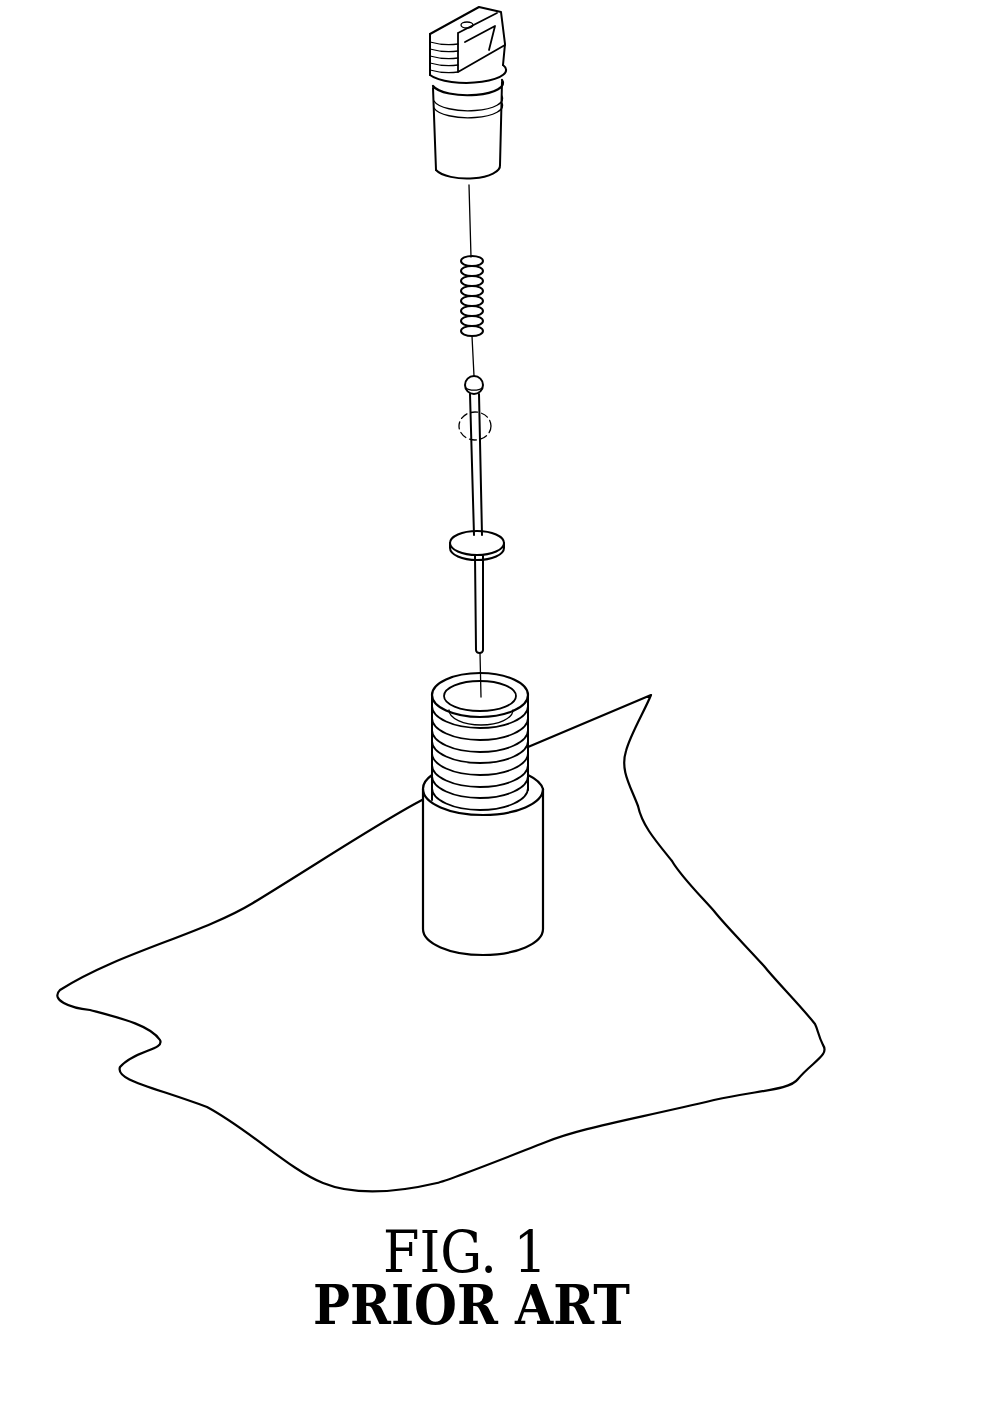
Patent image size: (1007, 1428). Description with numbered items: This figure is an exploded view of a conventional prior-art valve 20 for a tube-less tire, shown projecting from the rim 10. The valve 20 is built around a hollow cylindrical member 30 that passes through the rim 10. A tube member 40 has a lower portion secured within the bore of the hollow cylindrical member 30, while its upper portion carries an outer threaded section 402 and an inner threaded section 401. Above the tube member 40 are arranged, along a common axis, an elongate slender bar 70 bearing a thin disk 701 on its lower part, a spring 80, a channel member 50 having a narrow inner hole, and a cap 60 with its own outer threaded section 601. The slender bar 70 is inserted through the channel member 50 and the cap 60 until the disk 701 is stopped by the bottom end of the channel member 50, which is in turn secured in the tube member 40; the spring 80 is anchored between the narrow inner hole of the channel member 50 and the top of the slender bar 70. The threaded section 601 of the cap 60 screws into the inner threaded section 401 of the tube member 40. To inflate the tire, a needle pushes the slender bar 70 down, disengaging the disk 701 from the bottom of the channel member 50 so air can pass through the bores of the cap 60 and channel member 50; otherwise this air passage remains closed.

The rim 10 is at (257, 927).
The valve 20 is at (545, 477).
The hollow cylindrical member 30 is at (527, 870).
The tube member 40 is at (548, 697).
The inner threaded section 401 is at (497, 707).
The outer threaded section 402 is at (530, 728).
The channel member 50 is at (496, 148).
The cap 60 is at (511, 41).
The outer threaded section 601 is at (500, 68).
The elongate slender bar 70 is at (518, 536).
The thin disk 701 is at (495, 547).
The spring 80 is at (482, 300).